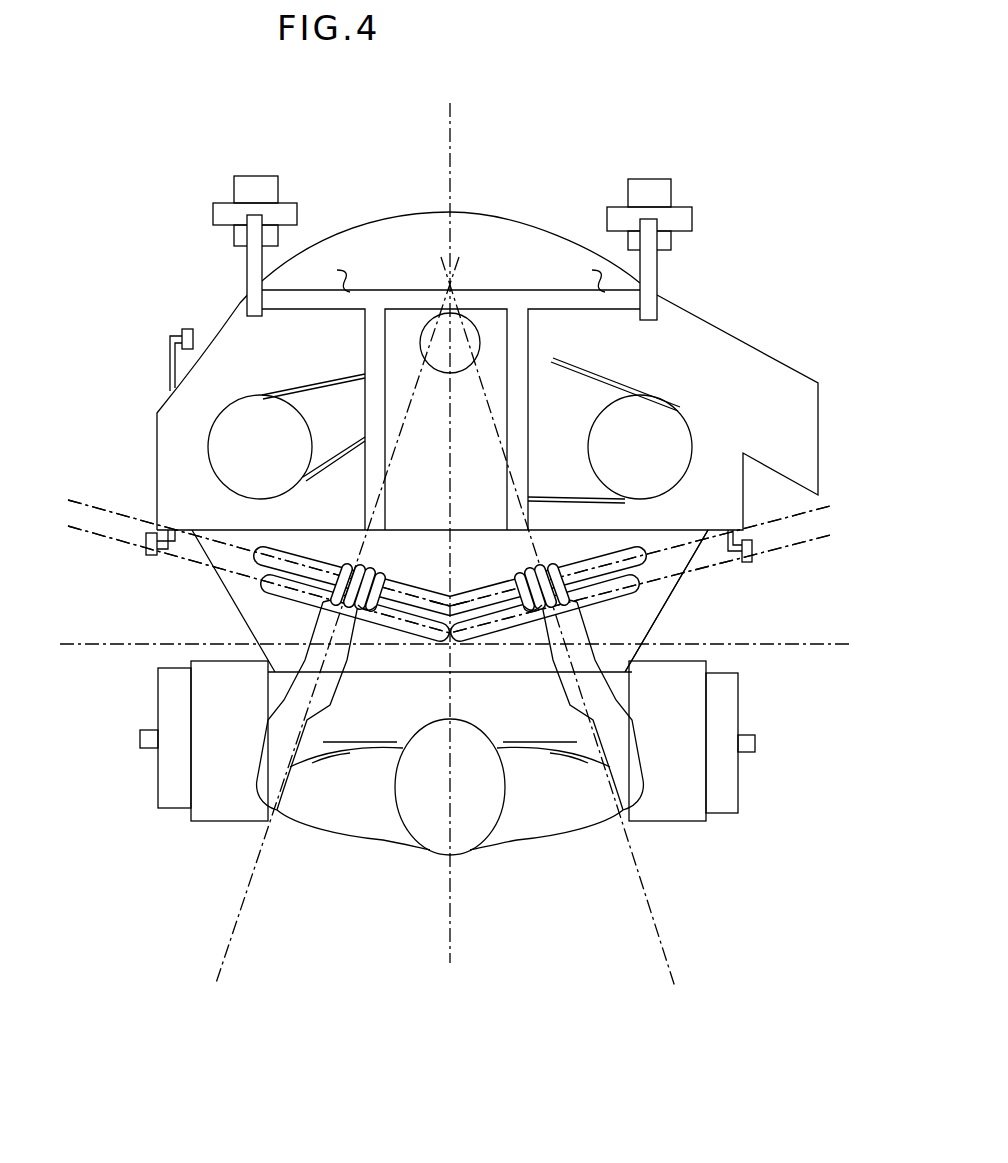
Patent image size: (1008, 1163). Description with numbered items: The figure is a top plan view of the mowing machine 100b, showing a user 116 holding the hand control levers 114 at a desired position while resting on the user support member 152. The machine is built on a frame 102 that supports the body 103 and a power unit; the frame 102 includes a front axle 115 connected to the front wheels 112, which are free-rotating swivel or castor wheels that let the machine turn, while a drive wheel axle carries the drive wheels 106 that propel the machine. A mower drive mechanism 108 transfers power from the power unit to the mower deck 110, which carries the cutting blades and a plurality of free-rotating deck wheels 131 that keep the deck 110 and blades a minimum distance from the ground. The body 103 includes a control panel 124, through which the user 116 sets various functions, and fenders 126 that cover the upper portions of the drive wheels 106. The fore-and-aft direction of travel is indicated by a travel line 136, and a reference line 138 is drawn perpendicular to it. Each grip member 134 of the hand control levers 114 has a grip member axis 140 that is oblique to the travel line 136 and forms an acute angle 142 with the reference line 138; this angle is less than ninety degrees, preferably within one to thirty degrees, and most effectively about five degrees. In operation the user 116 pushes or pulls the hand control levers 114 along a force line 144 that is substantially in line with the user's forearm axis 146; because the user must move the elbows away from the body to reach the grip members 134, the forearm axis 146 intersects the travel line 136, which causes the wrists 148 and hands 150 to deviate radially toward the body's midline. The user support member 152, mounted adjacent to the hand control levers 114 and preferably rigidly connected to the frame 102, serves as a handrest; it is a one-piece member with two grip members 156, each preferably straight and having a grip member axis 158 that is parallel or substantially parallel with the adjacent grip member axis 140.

The mowing machine 100b is at (487, 277).
The frame 102 is at (553, 283).
The body 103 is at (680, 613).
The drive wheels 106 is at (156, 772).
The mower drive mechanism 108 is at (437, 322).
The mower deck 110 is at (522, 218).
The front wheels 112 is at (220, 180).
The hand control levers 114 is at (383, 634).
The front axle 115 is at (459, 275).
The user 116 is at (465, 858).
The control panel 124 is at (230, 608).
The fenders 126 is at (222, 824).
The deck wheels 131 is at (187, 323).
The grip member 134 is at (245, 626).
The travel line 136 is at (525, 550).
The reference line 138 is at (115, 646).
The grip member axis 140 is at (97, 534).
The acute angle 142 is at (110, 539).
The force line 144 is at (445, 622).
The forearm axis 146 is at (413, 400).
The wrists 148 is at (300, 630).
The hands 150 is at (343, 560).
The user support member 152 is at (432, 597).
The grip members 156 is at (282, 552).
The grip member axis 158 is at (95, 502).